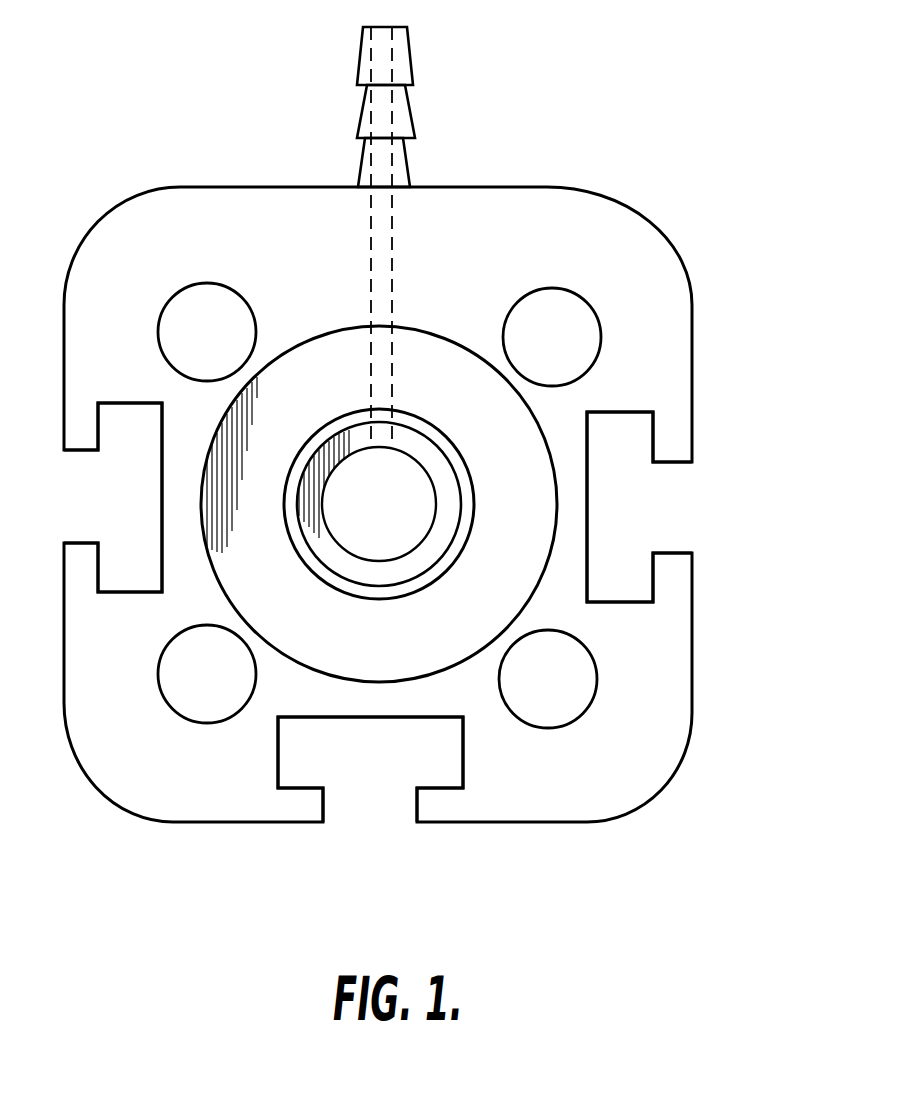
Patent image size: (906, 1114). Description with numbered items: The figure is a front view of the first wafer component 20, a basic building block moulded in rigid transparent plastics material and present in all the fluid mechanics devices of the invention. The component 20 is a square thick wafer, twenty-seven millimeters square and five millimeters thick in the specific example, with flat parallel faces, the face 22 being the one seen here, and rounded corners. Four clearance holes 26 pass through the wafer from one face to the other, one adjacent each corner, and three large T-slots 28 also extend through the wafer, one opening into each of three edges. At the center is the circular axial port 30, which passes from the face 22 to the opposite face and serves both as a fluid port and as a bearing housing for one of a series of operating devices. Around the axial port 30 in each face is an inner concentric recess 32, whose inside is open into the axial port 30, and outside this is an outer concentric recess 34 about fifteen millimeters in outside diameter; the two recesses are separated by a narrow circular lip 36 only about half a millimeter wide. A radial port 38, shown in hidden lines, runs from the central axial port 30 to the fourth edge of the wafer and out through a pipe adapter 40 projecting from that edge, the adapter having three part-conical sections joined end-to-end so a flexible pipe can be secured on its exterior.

The first wafer component 20 is at (440, 475).
The face 22 is at (242, 205).
The clearance holes 26 is at (195, 293).
The T-slots 28 is at (643, 498).
The central circular axial port 30 is at (360, 533).
The inner concentric recess 32 is at (425, 553).
The outer concentric recess 34 is at (472, 378).
The circular lip 36 is at (455, 470).
The radial port 38 is at (395, 243).
The pipe adapter 40 is at (413, 68).